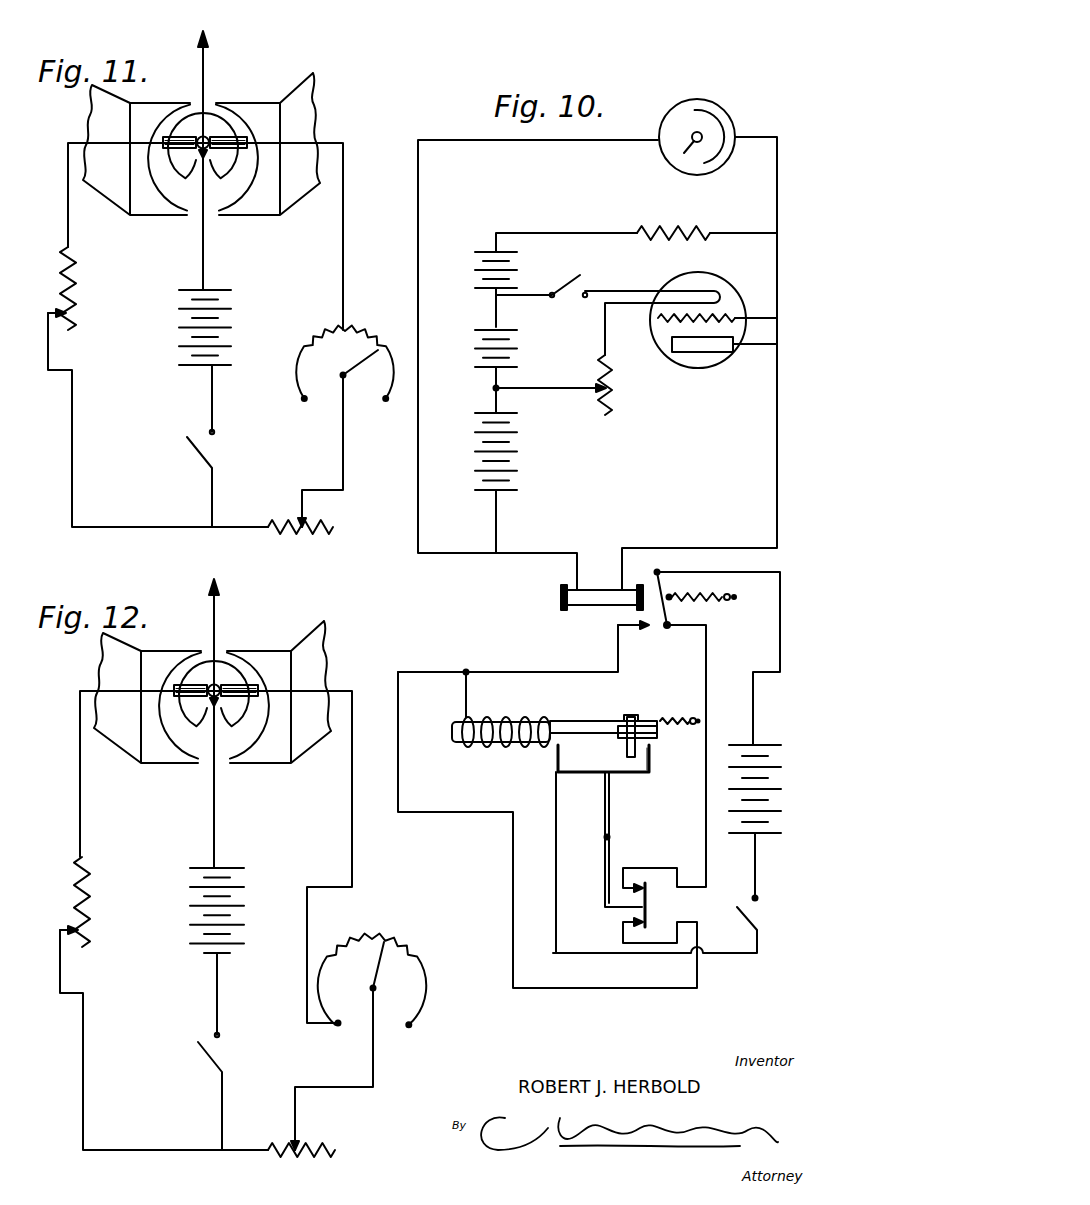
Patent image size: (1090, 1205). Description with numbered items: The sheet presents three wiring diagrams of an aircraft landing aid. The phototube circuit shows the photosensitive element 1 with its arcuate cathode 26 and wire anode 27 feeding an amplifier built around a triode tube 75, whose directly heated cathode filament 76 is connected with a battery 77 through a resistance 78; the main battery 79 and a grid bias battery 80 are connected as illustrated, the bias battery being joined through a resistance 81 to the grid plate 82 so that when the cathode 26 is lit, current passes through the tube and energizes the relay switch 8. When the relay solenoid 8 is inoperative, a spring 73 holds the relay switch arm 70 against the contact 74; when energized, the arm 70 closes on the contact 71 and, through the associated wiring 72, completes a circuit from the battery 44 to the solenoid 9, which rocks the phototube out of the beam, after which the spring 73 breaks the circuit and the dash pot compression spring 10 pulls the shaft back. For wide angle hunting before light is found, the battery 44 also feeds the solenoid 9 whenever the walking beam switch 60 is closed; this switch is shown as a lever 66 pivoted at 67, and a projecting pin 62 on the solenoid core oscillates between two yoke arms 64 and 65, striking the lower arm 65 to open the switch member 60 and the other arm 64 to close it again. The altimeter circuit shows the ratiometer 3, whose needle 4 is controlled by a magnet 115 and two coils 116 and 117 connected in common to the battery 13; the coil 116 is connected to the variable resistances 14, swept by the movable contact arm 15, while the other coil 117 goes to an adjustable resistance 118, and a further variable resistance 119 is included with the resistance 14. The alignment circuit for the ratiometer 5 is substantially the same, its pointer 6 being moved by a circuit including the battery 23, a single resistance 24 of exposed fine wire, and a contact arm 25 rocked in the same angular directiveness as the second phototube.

In FIG. 10, the photosensitive element 1 is at (726, 112).
In FIG. 10, the cathode 26 is at (700, 115).
In FIG. 10, the wire anode 27 is at (685, 148).
In FIG. 10, the grid bias battery 80 is at (478, 264).
In FIG. 10, the resistance 81 is at (646, 228).
In FIG. 10, the cathode filament 76 is at (702, 290).
In FIG. 10, the grid plate 82 is at (655, 320).
In FIG. 10, the triode tube 75 is at (700, 369).
In FIG. 10, the battery 77 is at (518, 348).
In FIG. 10, the resistance 78 is at (612, 394).
In FIG. 10, the main battery 79 is at (519, 465).
In FIG. 10, the relay switch 8 is at (602, 598).
In FIG. 10, the relay switch arm 70 is at (664, 632).
In FIG. 10, the contact 74 is at (670, 626).
In FIG. 10, the spring 73 is at (704, 600).
In FIG. 10, the contact 71 is at (641, 633).
In FIG. 10, the wiring 72 is at (520, 670).
In FIG. 10, the solenoid 9 is at (505, 716).
In FIG. 10, the compression spring 10 is at (675, 719).
In FIG. 10, the projecting pin 62 is at (626, 750).
In FIG. 10, the lower arm 65 is at (560, 760).
In FIG. 10, the arm 64 is at (651, 762).
In FIG. 10, the lever 66 is at (609, 810).
In FIG. 10, the pivot 67 is at (609, 837).
In FIG. 10, the walking beam switch 60 is at (647, 915).
In FIG. 10, the battery 44 is at (770, 776).
In FIG. 11, the needle 4 is at (203, 60).
In FIG. 12, the pointer 6 is at (214, 618).
In FIG. 11, the magnet 115 is at (212, 120).
In FIG. 12, the magnet 115 is at (223, 668).
In FIG. 11, the coil 116 is at (245, 140).
In FIG. 12, the coil 116 is at (256, 688).
In FIG. 11, the coil 117 is at (166, 138).
In FIG. 12, the coil 117 is at (177, 686).
In FIG. 11, the ratiometer 3 is at (214, 166).
In FIG. 12, the ratiometer 5 is at (225, 714).
In FIG. 11, the adjustable resistance 118 is at (73, 290).
In FIG. 12, the adjustable resistance 118 is at (89, 918).
In FIG. 11, the battery 13 is at (230, 326).
In FIG. 12, the battery 23 is at (243, 926).
In FIG. 11, the variable resistances 14 is at (303, 342).
In FIG. 12, the resistance 24 is at (375, 934).
In FIG. 11, the contact arm 15 is at (372, 356).
In FIG. 12, the contact arm 25 is at (380, 966).
In FIG. 11, the variable resistance 119 is at (318, 533).
In FIG. 12, the variable resistance 119 is at (312, 1142).